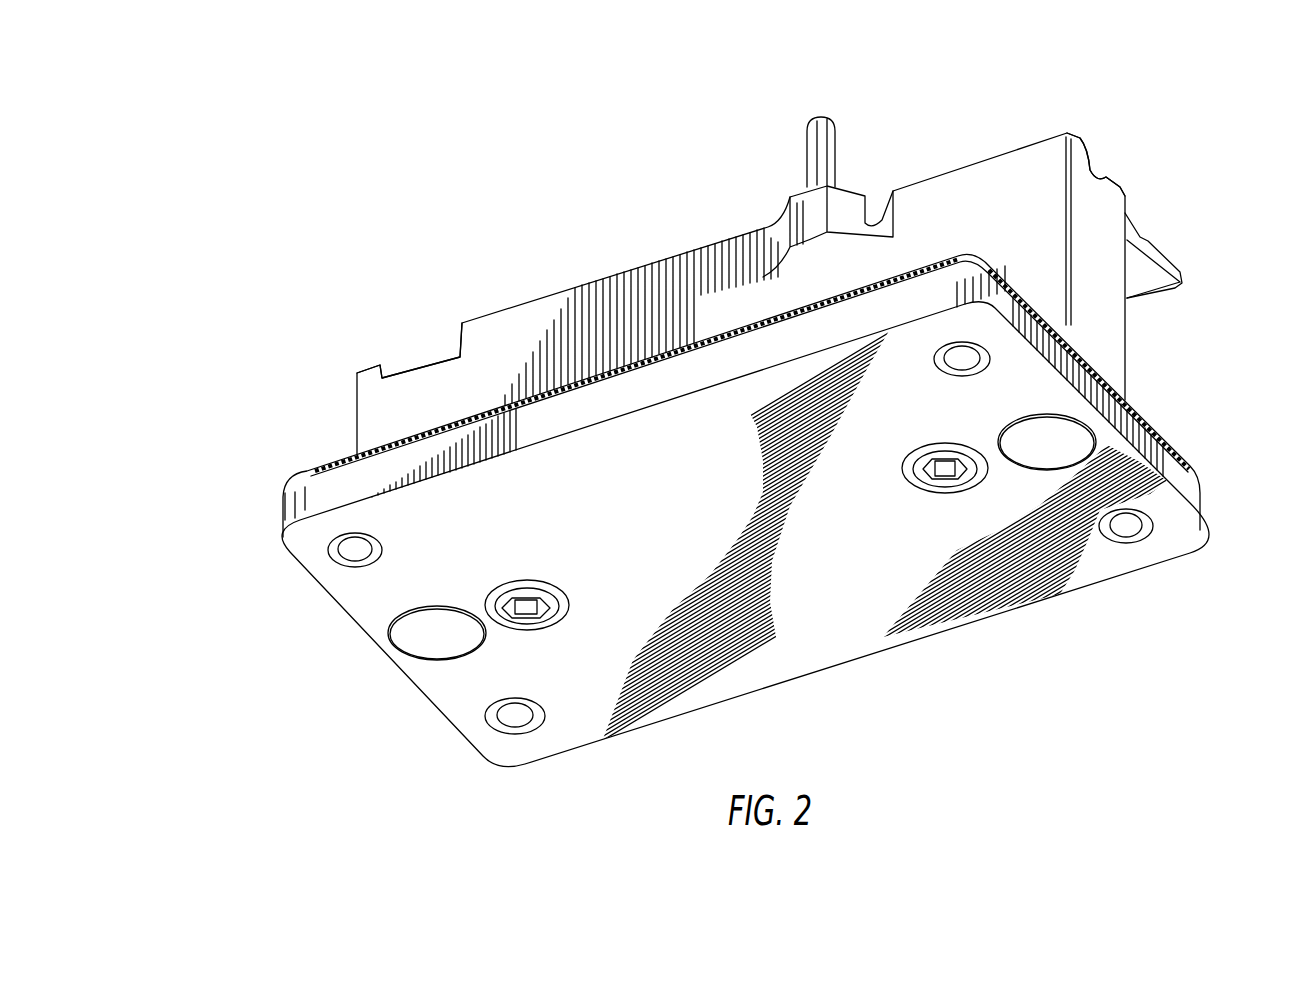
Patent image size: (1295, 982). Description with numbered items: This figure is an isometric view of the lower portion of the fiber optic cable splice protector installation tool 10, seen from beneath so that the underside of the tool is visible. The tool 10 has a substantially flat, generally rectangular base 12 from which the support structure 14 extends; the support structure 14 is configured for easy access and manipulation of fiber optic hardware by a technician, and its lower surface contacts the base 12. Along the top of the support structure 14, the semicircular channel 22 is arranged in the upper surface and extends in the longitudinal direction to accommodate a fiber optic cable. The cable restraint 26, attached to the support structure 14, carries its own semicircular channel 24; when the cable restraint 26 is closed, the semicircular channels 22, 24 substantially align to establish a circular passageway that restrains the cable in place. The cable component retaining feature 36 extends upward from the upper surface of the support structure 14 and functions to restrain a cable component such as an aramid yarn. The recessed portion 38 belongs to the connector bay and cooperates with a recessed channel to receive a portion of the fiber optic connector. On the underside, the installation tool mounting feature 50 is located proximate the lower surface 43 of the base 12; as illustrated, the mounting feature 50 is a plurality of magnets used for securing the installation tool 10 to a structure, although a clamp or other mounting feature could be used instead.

The tool 10 is at (232, 526).
The base 12 is at (613, 405).
The support structure 14 is at (370, 413).
The semicircular channel 22 is at (1097, 165).
The semicircular channel 24 is at (1140, 233).
The cable restraint 26 is at (1140, 272).
The cable component retaining feature 36 is at (818, 147).
The recessed portion 38 is at (430, 360).
The lower surface 43 is at (593, 650).
The installation tool mounting feature 50 is at (440, 640).